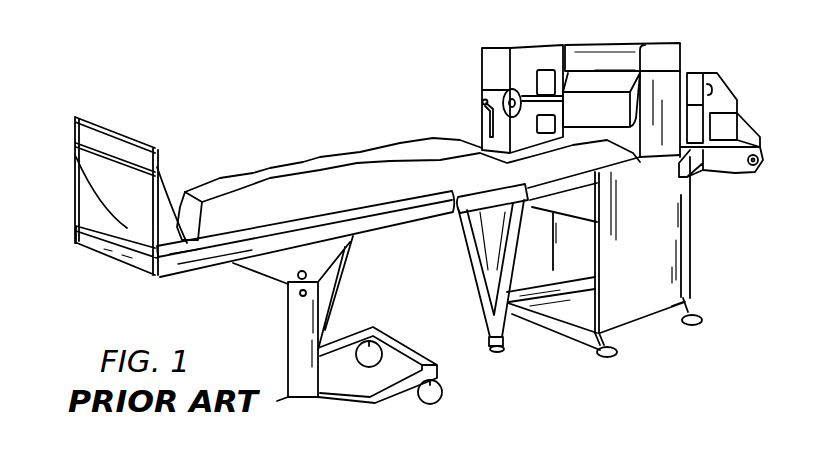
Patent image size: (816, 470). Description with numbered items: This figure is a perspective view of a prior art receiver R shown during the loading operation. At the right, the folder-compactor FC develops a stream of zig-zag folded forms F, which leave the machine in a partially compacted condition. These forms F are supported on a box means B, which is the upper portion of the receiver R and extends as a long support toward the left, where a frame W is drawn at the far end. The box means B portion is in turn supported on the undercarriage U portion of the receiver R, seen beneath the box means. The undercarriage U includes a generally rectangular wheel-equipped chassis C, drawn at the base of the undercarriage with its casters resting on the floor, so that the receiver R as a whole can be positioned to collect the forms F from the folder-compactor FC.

The wind-up frame / fabric roll holder W is at (123, 200).
The box means B is at (203, 262).
The forms F is at (263, 197).
The folder-compactor FC is at (487, 43).
The receiver R is at (282, 353).
The undercarriage U is at (305, 373).
The chassis C is at (413, 350).